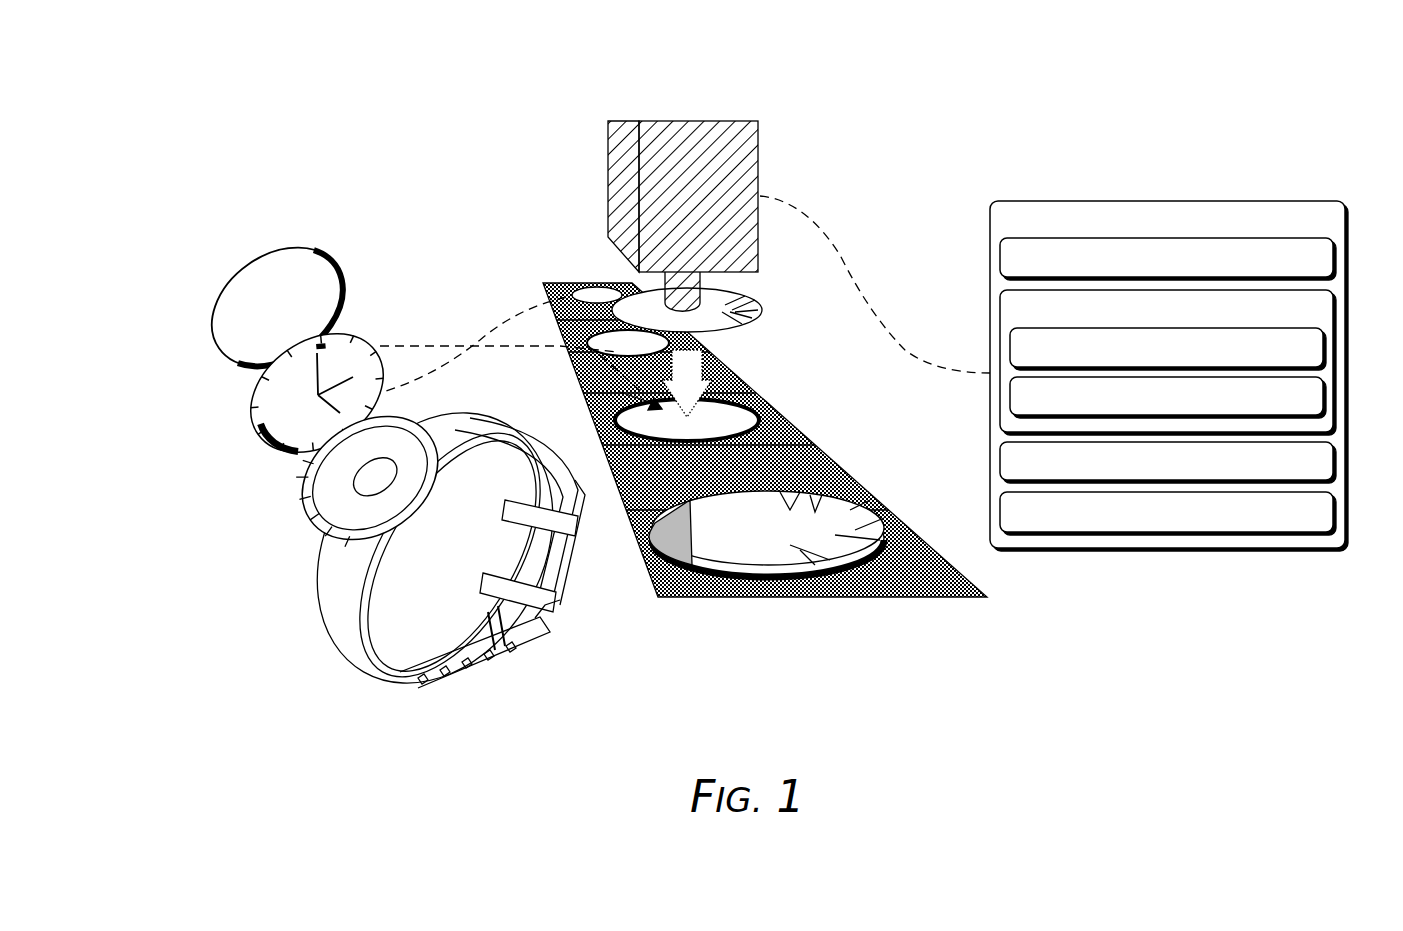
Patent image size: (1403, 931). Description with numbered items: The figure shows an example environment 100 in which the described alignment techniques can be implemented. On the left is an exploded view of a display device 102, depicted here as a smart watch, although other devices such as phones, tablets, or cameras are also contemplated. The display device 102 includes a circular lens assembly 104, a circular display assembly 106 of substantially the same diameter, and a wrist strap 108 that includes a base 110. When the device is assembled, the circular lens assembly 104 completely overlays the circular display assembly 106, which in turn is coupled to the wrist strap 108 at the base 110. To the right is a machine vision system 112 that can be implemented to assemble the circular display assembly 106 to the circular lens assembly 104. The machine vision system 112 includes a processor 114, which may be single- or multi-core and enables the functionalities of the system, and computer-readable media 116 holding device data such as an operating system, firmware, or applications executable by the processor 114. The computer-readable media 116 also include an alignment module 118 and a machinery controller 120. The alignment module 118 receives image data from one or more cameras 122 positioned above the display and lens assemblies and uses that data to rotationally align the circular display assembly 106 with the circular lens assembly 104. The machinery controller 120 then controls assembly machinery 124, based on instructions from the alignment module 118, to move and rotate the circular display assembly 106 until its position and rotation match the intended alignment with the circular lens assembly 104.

The environment 100 is at (1266, 66).
The display device 102 is at (228, 216).
The circular lens assembly 104 is at (302, 243).
The circular display assembly 106 is at (378, 333).
The wrist strap 108 is at (320, 613).
The base 110 is at (320, 525).
The machine vision system 112 is at (1301, 231).
The processor 114 is at (1292, 268).
The computer-readable media 116 is at (1292, 320).
The alignment module 118 is at (1282, 358).
The machinery controller 120 is at (1282, 406).
The cameras 122 is at (1292, 471).
The assembly machinery 124 is at (1292, 521).